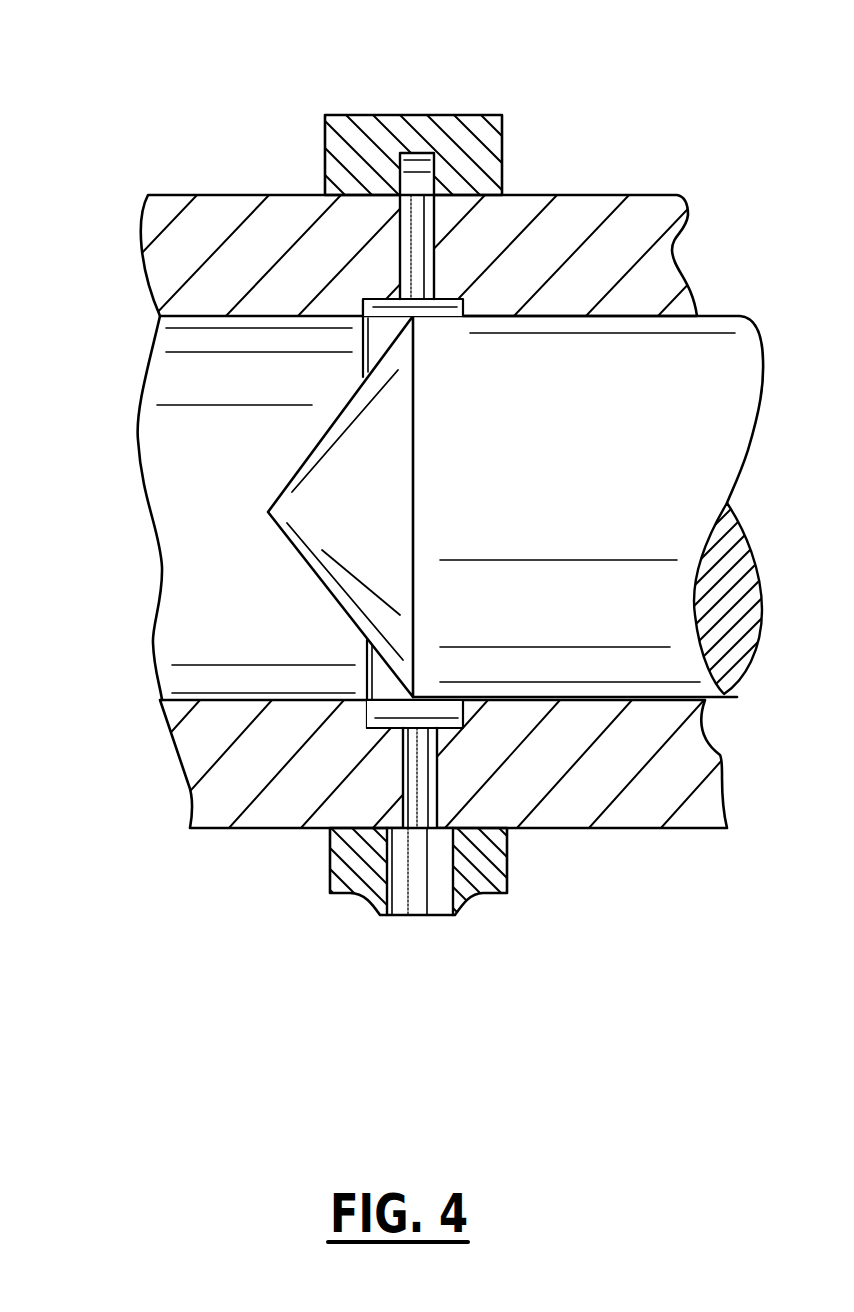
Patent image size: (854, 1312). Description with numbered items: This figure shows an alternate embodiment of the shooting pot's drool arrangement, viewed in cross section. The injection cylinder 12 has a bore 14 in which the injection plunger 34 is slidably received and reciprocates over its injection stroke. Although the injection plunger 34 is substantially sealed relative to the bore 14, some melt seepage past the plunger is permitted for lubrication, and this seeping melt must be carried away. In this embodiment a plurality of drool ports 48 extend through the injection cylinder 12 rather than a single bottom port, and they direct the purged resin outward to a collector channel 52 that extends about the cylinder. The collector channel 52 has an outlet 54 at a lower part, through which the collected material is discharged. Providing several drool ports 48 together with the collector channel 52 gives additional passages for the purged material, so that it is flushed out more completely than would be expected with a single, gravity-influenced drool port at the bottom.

The injection cylinder 12 is at (190, 784).
The bore 14 is at (186, 495).
The injection plunger 34 is at (528, 535).
The drool port 48 is at (433, 247).
The collector channel 52 is at (400, 155).
The outlet 54 is at (417, 895).